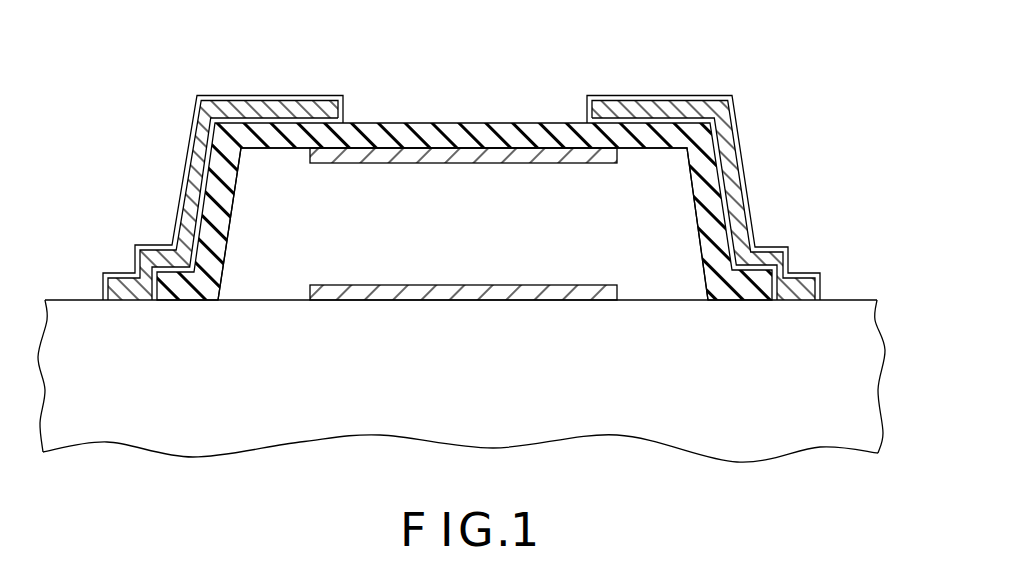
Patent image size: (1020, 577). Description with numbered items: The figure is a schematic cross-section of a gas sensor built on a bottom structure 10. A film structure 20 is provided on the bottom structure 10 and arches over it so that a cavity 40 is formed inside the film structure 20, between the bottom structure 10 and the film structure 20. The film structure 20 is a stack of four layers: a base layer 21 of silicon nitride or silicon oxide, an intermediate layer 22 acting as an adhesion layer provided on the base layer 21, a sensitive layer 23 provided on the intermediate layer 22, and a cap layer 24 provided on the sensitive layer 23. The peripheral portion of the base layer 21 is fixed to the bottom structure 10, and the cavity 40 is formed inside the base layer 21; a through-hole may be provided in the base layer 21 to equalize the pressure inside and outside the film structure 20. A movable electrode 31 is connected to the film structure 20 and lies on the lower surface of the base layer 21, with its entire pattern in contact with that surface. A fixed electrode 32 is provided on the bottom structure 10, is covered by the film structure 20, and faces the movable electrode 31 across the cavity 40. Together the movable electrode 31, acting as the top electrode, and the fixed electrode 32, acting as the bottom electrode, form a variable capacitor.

The bottom structure 10 is at (210, 440).
The film structure 20 is at (697, 83).
The base layer 21 is at (717, 223).
The intermediate layer 22 is at (727, 187).
The sensitive layer 23 is at (726, 157).
The cap layer 24 is at (740, 118).
The movable electrode 31 is at (512, 157).
The fixed electrode 32 is at (418, 292).
The cavity 40 is at (303, 188).